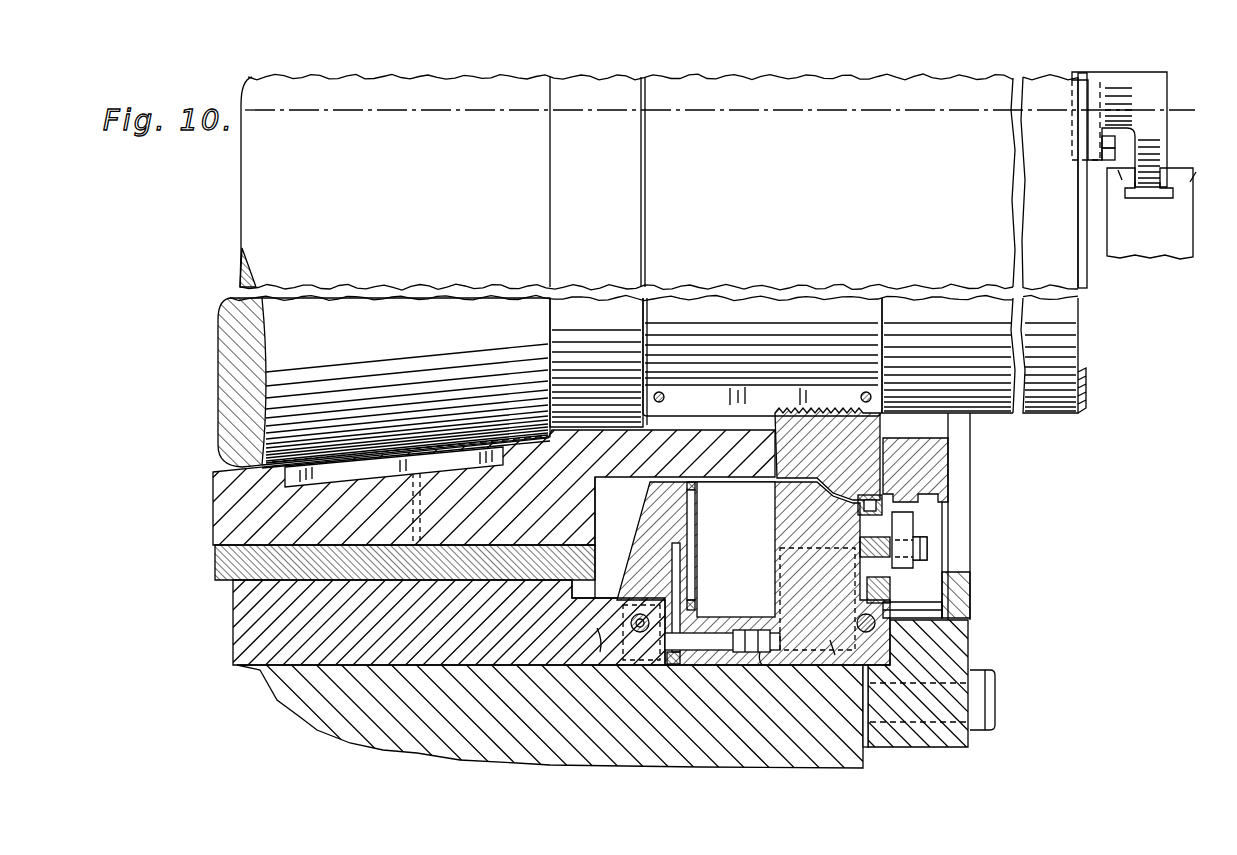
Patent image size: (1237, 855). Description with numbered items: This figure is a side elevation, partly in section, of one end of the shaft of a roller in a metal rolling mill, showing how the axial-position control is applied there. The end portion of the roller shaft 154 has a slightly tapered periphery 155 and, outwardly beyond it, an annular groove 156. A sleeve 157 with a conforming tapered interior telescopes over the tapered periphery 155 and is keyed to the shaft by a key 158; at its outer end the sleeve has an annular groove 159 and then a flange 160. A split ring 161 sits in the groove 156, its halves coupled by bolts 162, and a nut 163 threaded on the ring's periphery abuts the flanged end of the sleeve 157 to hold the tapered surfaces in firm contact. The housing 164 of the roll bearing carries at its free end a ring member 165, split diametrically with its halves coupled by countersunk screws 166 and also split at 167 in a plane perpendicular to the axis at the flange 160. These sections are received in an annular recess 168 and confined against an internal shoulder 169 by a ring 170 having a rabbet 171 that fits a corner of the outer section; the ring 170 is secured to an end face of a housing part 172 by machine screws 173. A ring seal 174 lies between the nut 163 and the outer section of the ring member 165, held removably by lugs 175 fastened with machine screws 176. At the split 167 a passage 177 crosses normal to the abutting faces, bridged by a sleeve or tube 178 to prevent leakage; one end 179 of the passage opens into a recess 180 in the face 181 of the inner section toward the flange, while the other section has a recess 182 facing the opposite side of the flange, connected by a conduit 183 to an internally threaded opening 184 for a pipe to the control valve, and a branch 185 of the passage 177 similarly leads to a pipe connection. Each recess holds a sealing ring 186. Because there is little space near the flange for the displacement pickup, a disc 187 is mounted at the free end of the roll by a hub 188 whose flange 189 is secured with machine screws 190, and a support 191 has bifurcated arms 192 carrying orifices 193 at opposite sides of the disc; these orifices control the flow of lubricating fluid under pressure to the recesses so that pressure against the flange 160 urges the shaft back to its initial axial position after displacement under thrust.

The roller shaft 154 is at (425, 334).
The tapered periphery 155 is at (512, 440).
The annular groove 156 is at (803, 385).
The sleeve 157 is at (213, 490).
The key 158 is at (394, 467).
The annular groove 159 is at (630, 478).
The flange 160 is at (762, 599).
The split ring 161 is at (782, 406).
The bolts 162 is at (674, 401).
The nut 163 is at (930, 475).
The housing 164 is at (236, 614).
The ring member 165 is at (675, 664).
The countersunk screws 166 is at (638, 632).
The split 167 is at (763, 652).
The annular recess 168 is at (645, 630).
The internal shoulder 169 is at (598, 642).
The ring 170 is at (950, 750).
The rabbet 171 is at (866, 745).
The housing part 172 is at (813, 765).
The machine screws 173 is at (995, 690).
The ring seal 174 is at (872, 500).
The lugs 175 is at (907, 528).
The machine screws 176 is at (927, 550).
The passage 177 is at (720, 650).
The sleeve or tube 178 is at (758, 632).
The end of passage 179 is at (690, 528).
The recess 180 is at (697, 506).
The face 181 is at (697, 541).
The recess 182 is at (776, 511).
The conduit 183 is at (830, 600).
The threaded opening 184 is at (895, 578).
The branch 185 is at (822, 640).
The sealing ring 186 is at (716, 477).
The disc 187 is at (1150, 162).
The hub 188 is at (1115, 78).
The flange 189 is at (1105, 160).
The machine screws 190 is at (1106, 170).
The support 191 is at (1190, 232).
The arms 192 is at (1120, 172).
The orifices 193 is at (1172, 182).